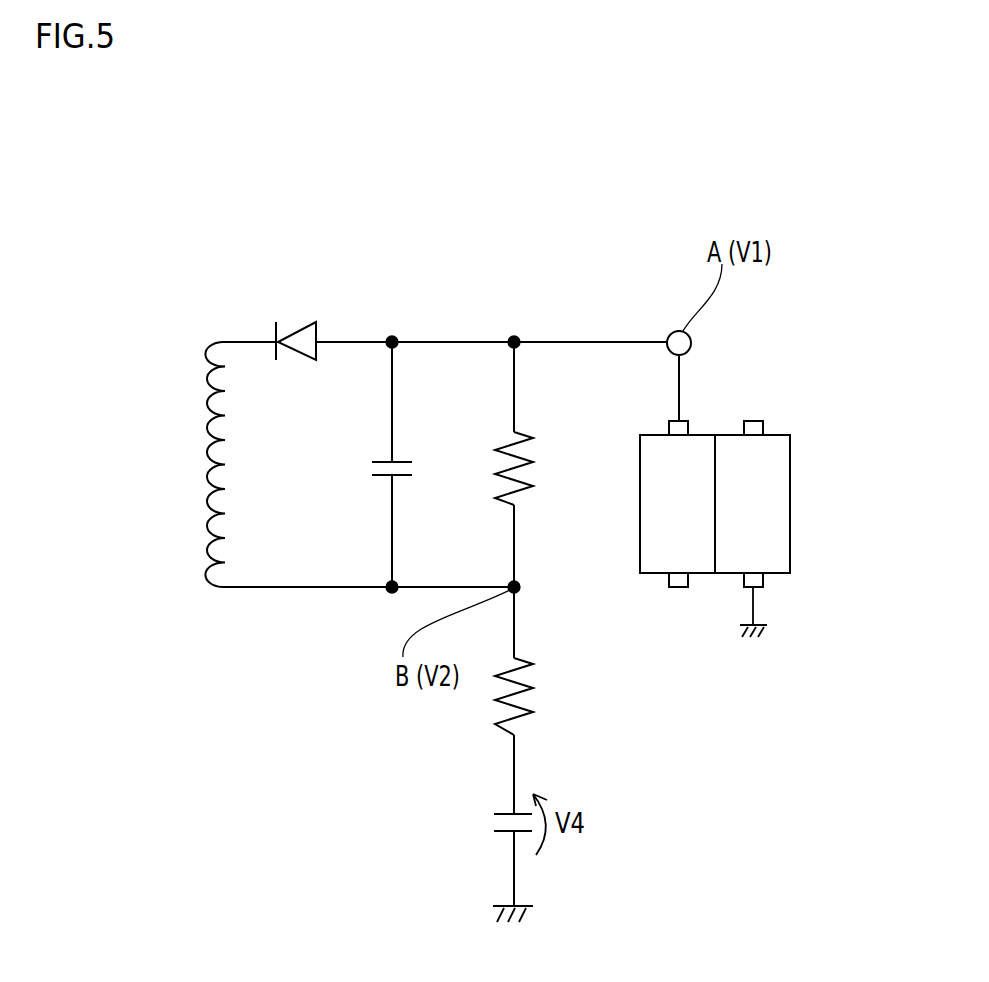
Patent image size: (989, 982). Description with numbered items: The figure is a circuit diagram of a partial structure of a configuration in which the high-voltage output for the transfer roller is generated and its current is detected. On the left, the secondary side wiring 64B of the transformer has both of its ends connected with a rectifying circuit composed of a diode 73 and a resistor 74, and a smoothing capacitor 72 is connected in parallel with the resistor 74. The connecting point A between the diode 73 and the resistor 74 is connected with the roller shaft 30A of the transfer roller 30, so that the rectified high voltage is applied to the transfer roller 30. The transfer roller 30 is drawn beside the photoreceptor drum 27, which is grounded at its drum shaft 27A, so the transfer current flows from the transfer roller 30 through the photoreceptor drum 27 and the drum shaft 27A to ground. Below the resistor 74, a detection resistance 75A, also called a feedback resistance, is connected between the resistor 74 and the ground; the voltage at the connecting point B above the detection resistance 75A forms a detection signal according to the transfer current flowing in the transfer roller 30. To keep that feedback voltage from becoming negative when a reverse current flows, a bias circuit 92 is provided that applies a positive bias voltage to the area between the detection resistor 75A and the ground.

The secondary side wiring 64B is at (210, 378).
The diode 73 is at (290, 333).
The smoothing capacitor 72 is at (383, 460).
The resistor 74 is at (520, 430).
The detection resistance 75A is at (525, 708).
The bias circuit 92 is at (510, 812).
The photoreceptor drum 27 is at (772, 516).
The drum shaft 27A is at (755, 590).
The transfer roller 30 is at (648, 493).
The roller shaft 30A is at (684, 420).